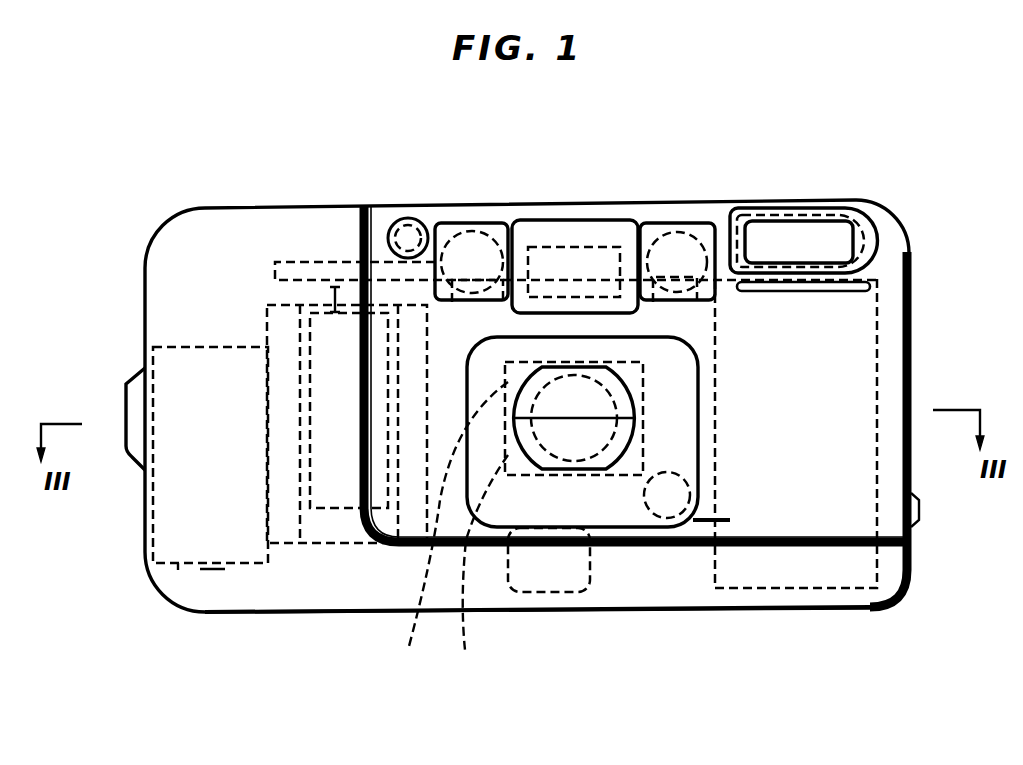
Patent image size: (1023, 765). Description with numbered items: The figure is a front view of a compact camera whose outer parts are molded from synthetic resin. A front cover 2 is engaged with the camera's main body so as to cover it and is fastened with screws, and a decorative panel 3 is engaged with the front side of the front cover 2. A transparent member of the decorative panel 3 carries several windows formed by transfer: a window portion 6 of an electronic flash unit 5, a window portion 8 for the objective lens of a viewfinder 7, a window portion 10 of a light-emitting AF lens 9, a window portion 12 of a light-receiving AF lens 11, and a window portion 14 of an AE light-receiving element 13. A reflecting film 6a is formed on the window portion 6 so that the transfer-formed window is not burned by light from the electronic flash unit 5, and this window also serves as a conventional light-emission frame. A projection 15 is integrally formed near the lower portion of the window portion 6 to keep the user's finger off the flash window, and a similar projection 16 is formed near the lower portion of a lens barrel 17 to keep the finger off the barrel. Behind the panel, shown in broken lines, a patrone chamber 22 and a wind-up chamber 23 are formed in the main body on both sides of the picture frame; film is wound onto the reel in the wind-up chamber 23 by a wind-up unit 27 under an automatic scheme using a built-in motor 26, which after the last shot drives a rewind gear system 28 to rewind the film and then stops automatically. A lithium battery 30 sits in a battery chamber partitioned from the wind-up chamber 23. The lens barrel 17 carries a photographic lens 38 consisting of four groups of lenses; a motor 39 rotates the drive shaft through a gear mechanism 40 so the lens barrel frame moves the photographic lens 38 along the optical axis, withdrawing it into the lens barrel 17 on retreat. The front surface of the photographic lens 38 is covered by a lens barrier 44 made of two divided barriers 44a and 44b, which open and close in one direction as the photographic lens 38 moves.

The front cover 2 is at (295, 218).
The decorative panel 3 is at (725, 217).
The electronic flash unit 5 is at (877, 275).
The window portion 6 is at (870, 230).
The reflecting film 6a is at (873, 250).
The viewfinder 7 is at (550, 247).
The window portion 8 is at (568, 232).
The light-emitting AF lens 9 is at (452, 233).
The window portion 10 is at (498, 230).
The light-receiving AF lens 11 is at (653, 223).
The window portion 12 is at (697, 223).
The AE light-receiving element 13 is at (407, 217).
The window portion 14 is at (393, 227).
The projection 15 is at (850, 292).
The projection 16 is at (728, 523).
The lens barrel 17 is at (508, 512).
The patrone chamber 22 is at (887, 333).
The wind-up chamber 23 is at (315, 547).
The built-in motor 26 is at (348, 508).
The wind-up unit 27 is at (274, 277).
The rewind gear system 28 is at (618, 247).
The lithium battery 30 is at (183, 567).
The photographic lens 38 is at (600, 438).
The motor 39 is at (593, 585).
The gear mechanism 40 is at (650, 520).
The lens barrier 44 is at (620, 390).
The divided barrier 44a is at (470, 568).
The divided barrier 44b is at (440, 532).